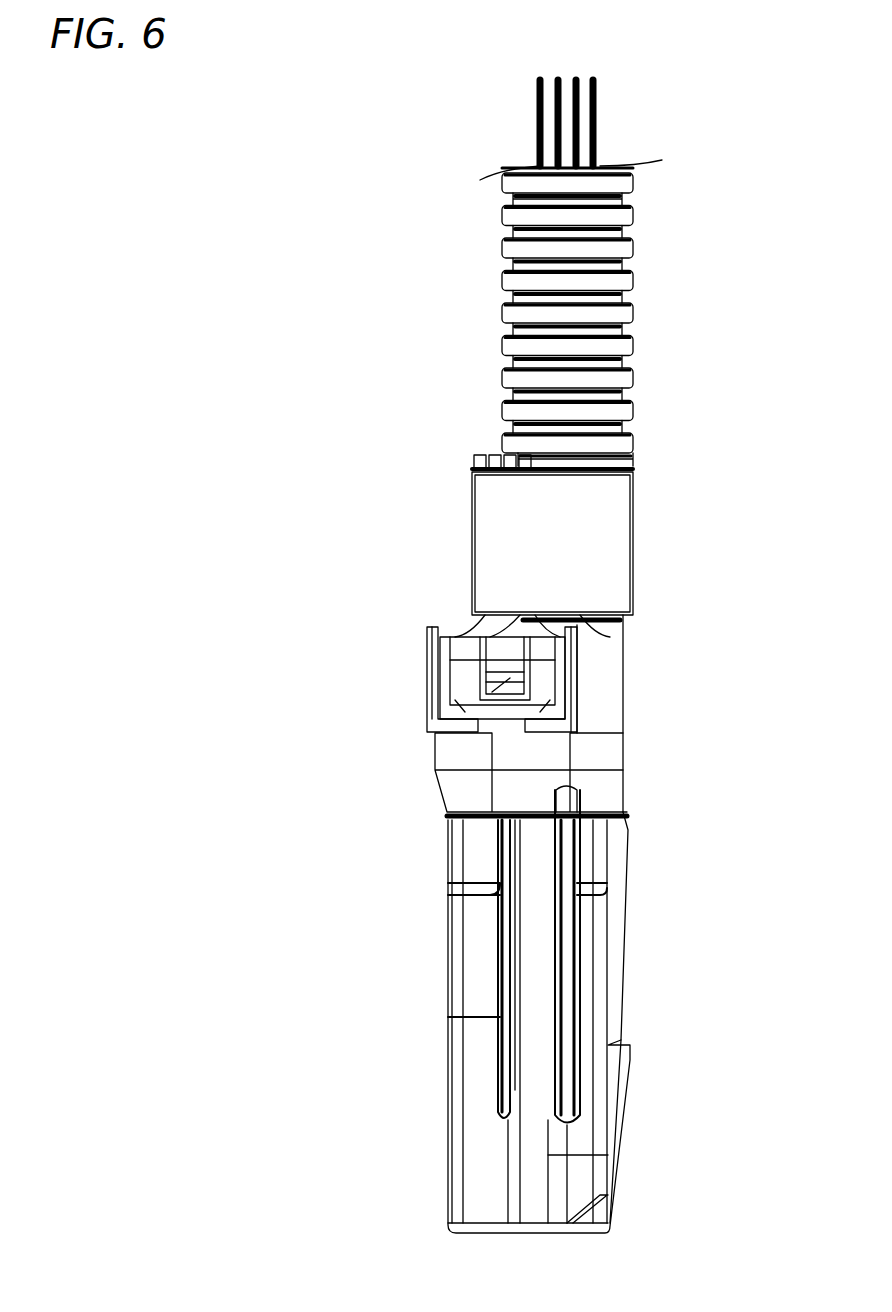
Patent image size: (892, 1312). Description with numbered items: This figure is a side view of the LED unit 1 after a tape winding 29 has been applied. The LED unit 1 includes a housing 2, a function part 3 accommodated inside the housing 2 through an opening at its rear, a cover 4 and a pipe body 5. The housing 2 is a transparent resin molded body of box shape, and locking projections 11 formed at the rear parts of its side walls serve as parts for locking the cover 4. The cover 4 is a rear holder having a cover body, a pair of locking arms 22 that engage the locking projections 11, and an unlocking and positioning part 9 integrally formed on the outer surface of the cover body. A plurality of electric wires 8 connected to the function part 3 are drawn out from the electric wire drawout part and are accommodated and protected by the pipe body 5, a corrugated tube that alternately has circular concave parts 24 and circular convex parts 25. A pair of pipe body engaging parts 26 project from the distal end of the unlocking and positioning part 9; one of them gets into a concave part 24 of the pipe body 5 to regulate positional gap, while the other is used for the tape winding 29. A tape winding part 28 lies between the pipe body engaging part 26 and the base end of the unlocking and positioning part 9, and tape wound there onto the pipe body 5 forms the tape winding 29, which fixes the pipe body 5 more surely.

The LED unit 1 is at (322, 290).
The housing 2 is at (478, 1095).
The function part 3 is at (480, 955).
The cover 4 is at (458, 637).
The pipe body 5 is at (633, 245).
The electric wires 8 is at (598, 112).
The unlocking and positioning part 9 is at (507, 455).
The locking projections 11 is at (478, 692).
The locking arms 22 is at (585, 680).
The concave parts 24 is at (622, 458).
The convex parts 25 is at (627, 443).
The pipe body engaging parts 26 is at (475, 455).
The tape winding part 28 is at (514, 533).
The tape winding 29 is at (612, 533).